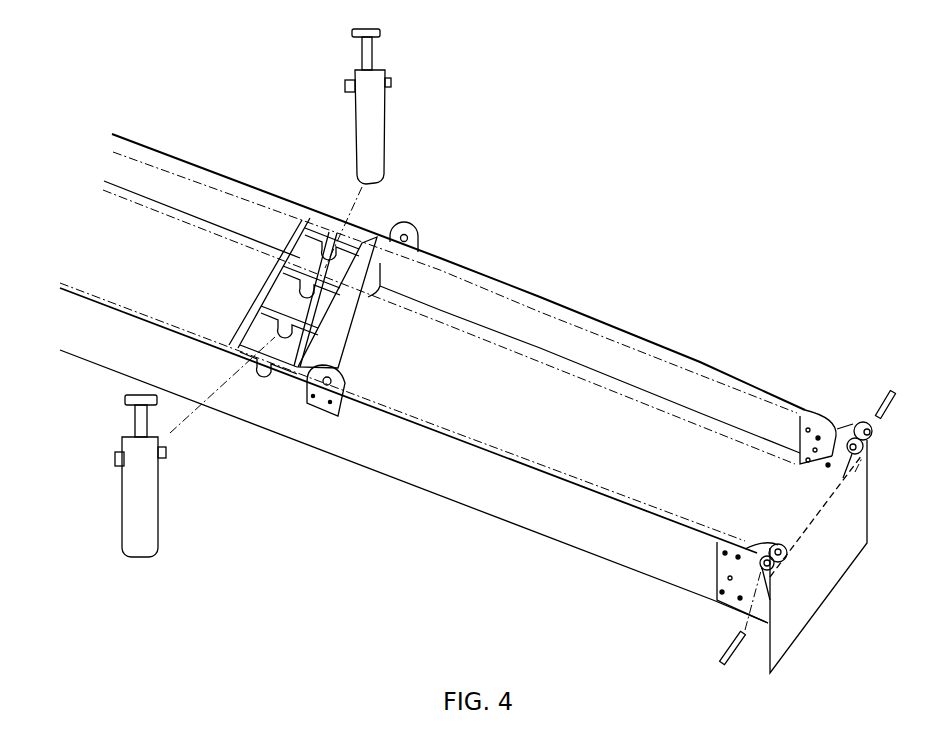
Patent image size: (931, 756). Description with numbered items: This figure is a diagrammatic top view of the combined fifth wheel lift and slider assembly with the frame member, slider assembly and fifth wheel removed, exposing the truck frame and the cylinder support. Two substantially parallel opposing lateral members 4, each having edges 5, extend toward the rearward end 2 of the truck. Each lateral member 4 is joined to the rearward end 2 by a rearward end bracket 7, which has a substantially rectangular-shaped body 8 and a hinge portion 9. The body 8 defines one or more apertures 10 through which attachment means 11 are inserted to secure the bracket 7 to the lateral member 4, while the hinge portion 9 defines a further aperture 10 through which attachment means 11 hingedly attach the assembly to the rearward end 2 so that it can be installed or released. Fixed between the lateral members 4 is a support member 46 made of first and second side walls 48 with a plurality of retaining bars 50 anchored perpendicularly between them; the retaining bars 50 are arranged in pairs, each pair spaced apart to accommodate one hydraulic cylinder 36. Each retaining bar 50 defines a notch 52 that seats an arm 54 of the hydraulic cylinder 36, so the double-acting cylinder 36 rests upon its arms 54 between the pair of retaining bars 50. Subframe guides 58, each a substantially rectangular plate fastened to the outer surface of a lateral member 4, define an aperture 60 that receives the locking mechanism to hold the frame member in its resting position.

The rearward end 2 is at (818, 556).
The lateral member 4 is at (432, 378).
The edge 5 is at (428, 343).
The rearward end bracket 7 is at (800, 436).
The body 8 is at (796, 505).
The hinge portion 9 is at (862, 423).
The aperture 10 is at (864, 447).
The attachment means 11 is at (809, 528).
The hydraulic cylinder 36 is at (253, 293).
The support member 46 is at (313, 297).
The side wall 48 is at (272, 278).
The retaining bar 50 is at (303, 237).
The notch 52 is at (286, 316).
The arm 54 is at (345, 86).
The subframe guide 58 is at (418, 240).
The aperture 60 is at (407, 232).